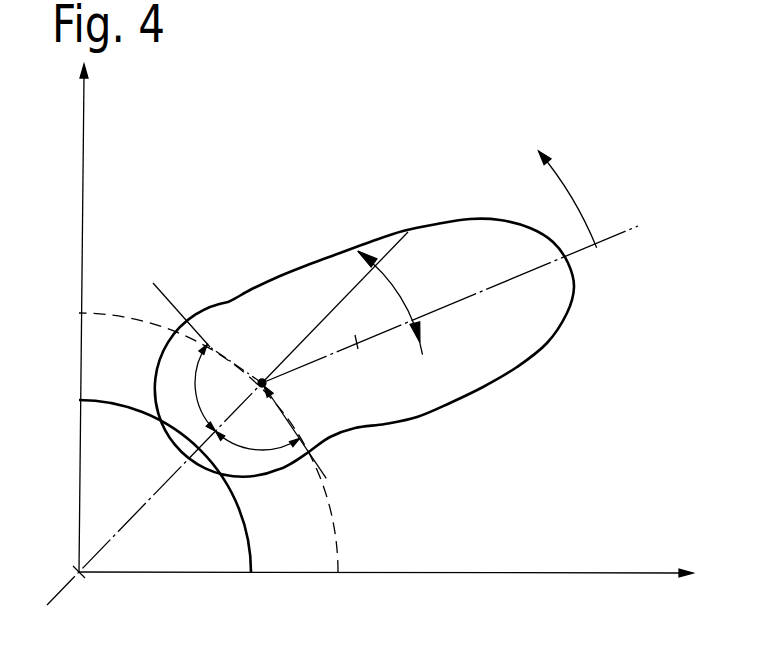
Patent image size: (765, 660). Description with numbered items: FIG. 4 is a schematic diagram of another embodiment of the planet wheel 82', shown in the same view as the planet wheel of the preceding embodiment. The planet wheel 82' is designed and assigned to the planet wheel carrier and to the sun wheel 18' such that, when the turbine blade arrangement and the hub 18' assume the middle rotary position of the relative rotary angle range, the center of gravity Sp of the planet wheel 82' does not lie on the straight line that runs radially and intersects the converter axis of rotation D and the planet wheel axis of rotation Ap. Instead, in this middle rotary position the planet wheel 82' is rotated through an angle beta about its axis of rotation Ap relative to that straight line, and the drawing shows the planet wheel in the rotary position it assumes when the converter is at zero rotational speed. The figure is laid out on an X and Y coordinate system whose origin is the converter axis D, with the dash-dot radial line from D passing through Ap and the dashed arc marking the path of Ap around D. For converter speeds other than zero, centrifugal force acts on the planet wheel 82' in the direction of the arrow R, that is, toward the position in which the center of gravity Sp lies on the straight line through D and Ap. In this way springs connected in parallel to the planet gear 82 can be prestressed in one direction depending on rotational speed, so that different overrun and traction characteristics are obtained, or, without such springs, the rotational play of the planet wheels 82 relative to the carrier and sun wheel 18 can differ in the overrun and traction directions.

The sun wheel 18' is at (165, 528).
The housing bore wall 18 is at (165, 528).
The planet wheel 82' is at (403, 348).
The rotor (piston) 82 is at (403, 348).
The direction of centrifugal force R is at (575, 202).
The converter axis of rotation D is at (78, 572).
The X axis X is at (386, 597).
The Y axis Y is at (68, 314).
The planet wheel axis of rotation Ap is at (266, 386).
The center of gravity Sp is at (357, 345).